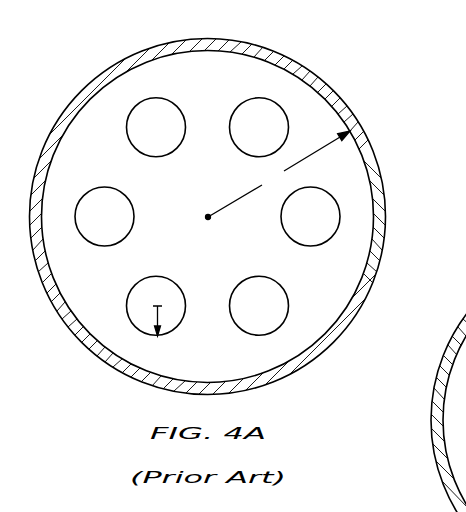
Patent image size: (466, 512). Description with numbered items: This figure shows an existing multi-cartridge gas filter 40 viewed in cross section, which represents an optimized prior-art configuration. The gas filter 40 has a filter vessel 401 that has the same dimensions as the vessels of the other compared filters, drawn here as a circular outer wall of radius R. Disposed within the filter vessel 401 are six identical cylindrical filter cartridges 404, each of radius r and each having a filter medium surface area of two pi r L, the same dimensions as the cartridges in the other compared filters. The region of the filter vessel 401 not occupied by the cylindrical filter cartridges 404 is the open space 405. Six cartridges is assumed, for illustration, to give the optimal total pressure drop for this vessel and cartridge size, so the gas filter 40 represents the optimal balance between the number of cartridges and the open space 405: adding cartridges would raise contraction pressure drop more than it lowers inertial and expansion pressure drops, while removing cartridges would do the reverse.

The multi-cartridge gas filter 40 is at (305, 33).
The filter vessel 401 is at (298, 61).
The cylindrical filter cartridge 404 is at (118, 272).
The open space 405 is at (305, 173).